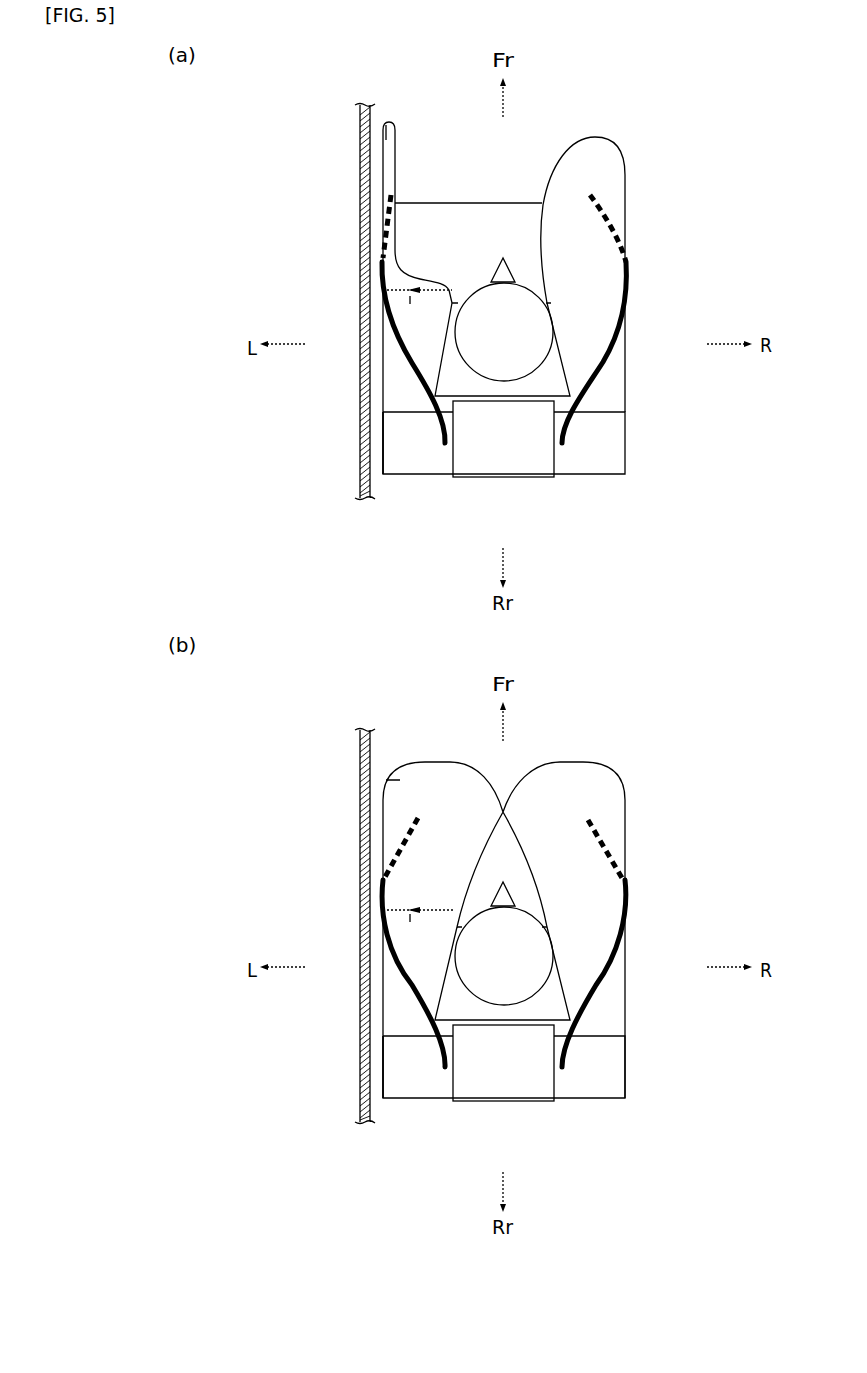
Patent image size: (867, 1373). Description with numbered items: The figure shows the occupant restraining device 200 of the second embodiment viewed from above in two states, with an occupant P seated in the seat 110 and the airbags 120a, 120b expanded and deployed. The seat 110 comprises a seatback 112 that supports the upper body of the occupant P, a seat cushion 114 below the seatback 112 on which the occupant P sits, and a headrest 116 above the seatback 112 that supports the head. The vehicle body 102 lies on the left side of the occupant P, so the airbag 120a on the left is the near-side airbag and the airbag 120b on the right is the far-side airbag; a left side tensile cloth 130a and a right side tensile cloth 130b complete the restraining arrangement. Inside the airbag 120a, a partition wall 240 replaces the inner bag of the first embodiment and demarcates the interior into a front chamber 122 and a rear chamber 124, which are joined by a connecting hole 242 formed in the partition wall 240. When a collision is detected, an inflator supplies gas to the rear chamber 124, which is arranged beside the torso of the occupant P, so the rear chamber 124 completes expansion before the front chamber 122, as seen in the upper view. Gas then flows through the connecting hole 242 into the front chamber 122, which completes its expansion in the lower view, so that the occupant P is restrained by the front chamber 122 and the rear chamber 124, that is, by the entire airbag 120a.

The occupant restraining device 200 is at (654, 122).
The vehicle body 102 is at (360, 465).
The seat 110 is at (597, 485).
The seatback 112 is at (420, 465).
The seat cushion 114 is at (490, 203).
The headrest 116 is at (507, 472).
The airbag 120a is at (383, 196).
The airbag 120b is at (625, 203).
The front chamber 122 is at (385, 146).
The rear chamber 124 is at (405, 320).
The left side tensile cloth 130a is at (397, 357).
The right side tensile cloth 130b is at (615, 348).
The partition wall 240 is at (397, 283).
The connecting hole 242 is at (412, 300).
The occupant P is at (507, 240).